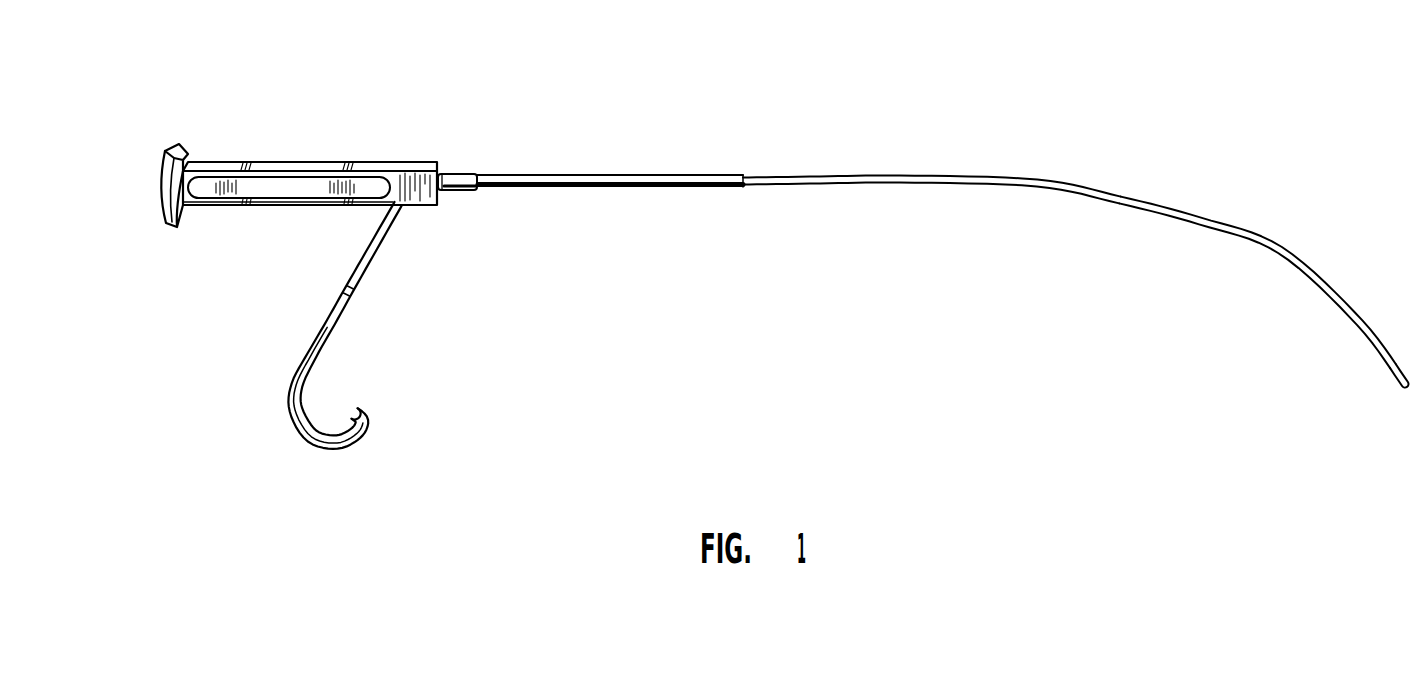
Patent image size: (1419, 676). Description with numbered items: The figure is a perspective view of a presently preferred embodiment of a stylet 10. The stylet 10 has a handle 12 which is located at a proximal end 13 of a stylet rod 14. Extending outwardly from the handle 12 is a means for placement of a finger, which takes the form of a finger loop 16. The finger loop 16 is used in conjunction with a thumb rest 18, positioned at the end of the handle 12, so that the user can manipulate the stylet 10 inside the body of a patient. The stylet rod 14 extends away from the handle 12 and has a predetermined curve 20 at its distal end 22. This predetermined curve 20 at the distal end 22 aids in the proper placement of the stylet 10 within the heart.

The stylet 10 is at (752, 134).
The handle 12 is at (268, 164).
The proximal end 13 is at (460, 173).
The stylet rod 14 is at (1037, 181).
The finger loop 16 is at (362, 411).
The thumb rest 18 is at (156, 186).
The predetermined curve 20 is at (1296, 238).
The distal end 22 is at (1383, 362).